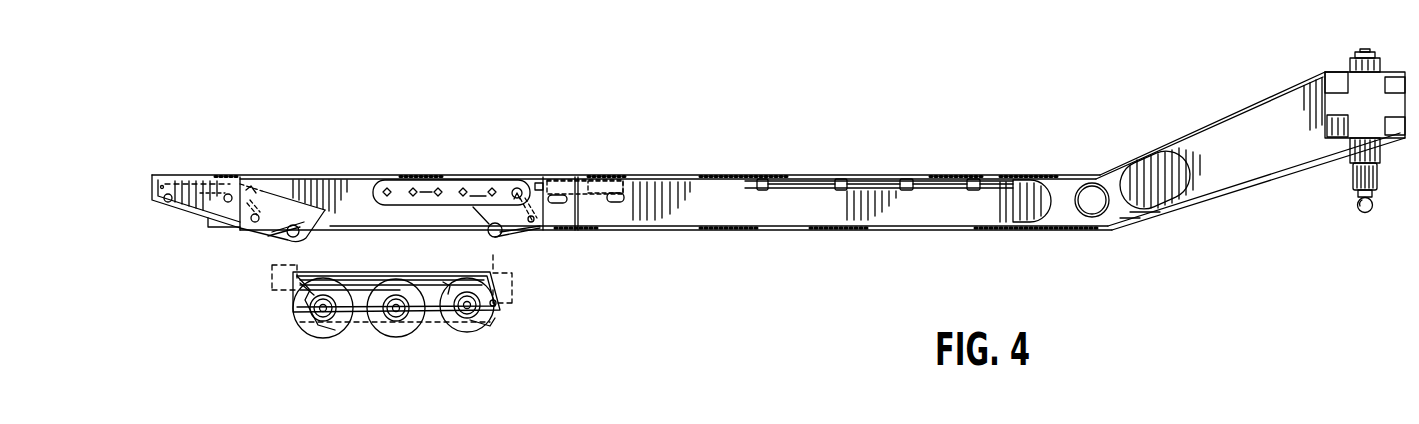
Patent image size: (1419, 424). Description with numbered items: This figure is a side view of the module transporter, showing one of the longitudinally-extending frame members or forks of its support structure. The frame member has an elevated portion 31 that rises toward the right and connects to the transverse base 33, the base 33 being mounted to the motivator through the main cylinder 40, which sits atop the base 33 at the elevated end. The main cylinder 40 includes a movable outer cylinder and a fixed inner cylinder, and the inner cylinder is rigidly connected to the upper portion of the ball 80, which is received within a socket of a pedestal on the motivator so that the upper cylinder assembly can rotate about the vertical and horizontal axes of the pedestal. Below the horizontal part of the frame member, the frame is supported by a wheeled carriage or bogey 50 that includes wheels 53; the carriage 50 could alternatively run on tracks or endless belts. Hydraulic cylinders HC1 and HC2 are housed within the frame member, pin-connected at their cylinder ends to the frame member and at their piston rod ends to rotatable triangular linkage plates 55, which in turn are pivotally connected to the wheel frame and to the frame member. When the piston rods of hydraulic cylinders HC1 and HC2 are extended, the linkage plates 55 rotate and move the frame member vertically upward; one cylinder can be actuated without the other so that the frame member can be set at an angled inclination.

The elevated portion 31 is at (1165, 200).
The transverse base 33 is at (1405, 80).
The main cylinder 40 is at (1377, 50).
The wheeled carriage 50 is at (447, 348).
The wheel 53 is at (487, 335).
The triangular linkage plate 55 is at (283, 240).
The ball 80 is at (1372, 213).
The hydraulic cylinder HC1 is at (178, 208).
The hydraulic cylinder HC2 is at (596, 176).